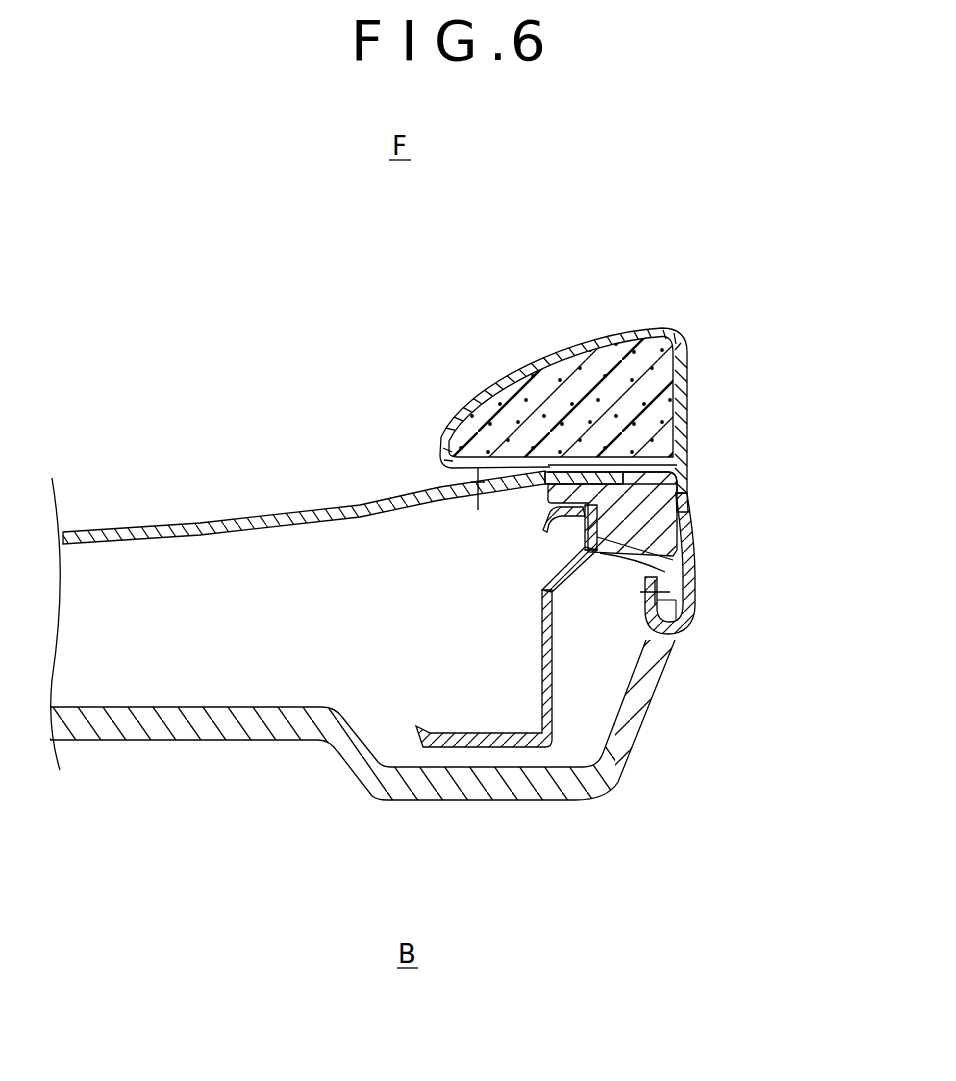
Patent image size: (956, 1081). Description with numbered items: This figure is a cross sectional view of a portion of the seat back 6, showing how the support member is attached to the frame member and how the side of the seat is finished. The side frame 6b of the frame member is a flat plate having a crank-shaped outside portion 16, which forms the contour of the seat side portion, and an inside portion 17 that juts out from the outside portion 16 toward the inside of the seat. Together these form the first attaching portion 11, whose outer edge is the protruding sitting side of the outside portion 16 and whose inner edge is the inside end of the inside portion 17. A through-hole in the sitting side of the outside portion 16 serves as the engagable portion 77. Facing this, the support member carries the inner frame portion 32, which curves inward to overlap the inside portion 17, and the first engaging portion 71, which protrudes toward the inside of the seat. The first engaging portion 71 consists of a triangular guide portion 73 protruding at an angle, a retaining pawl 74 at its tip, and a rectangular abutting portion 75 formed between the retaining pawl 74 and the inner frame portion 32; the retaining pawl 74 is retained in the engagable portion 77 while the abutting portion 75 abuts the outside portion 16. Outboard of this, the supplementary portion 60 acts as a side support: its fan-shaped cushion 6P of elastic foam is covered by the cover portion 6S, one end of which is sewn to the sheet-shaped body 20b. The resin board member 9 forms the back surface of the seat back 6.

The seat back 6 is at (677, 224).
The supplementary portion 60 is at (563, 357).
The cover portion 6S is at (573, 345).
The cushion 6P is at (625, 340).
The sheet-shaped body 20b is at (184, 515).
The inner frame portion 32 is at (550, 487).
The first engaging portion 71 is at (493, 580).
The abutting portion 75 is at (590, 525).
The retaining pawl 74 is at (545, 572).
The guide portion 73 is at (657, 570).
The inside portion 17 is at (683, 492).
The engagable portion 77 is at (688, 503).
The outside portion 16 is at (687, 550).
The first attaching portion 11 is at (738, 543).
The side frame 6b is at (567, 702).
The board member 9 is at (617, 770).